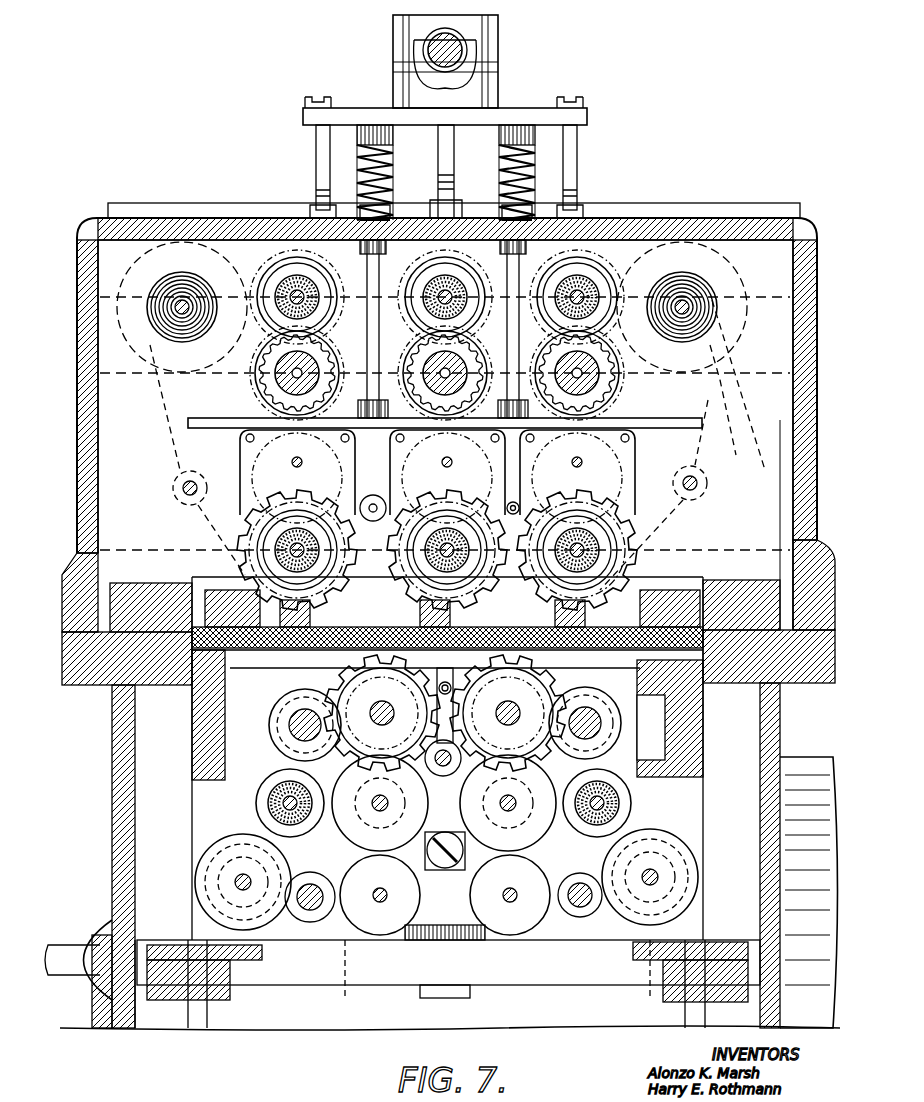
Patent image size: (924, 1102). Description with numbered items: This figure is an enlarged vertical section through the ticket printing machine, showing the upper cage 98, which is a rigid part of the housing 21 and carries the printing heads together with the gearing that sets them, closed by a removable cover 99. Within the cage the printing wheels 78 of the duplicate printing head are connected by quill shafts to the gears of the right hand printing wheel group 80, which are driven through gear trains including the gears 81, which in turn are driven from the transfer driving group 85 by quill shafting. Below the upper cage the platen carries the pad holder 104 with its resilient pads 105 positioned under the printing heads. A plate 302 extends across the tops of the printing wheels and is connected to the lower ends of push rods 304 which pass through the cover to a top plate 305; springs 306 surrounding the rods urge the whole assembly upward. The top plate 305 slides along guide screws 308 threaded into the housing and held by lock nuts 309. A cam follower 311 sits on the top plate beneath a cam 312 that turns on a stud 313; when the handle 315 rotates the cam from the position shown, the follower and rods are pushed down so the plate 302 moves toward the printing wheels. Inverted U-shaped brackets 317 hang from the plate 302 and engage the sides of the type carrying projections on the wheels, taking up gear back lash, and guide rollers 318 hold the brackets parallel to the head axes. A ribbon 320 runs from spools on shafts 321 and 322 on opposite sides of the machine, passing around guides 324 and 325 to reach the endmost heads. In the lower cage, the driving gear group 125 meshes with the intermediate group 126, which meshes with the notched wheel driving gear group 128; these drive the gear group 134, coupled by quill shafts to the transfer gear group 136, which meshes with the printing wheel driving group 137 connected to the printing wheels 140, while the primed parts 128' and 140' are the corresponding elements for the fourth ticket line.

The cam 312 is at (498, 35).
The handle 315 is at (425, 48).
The cam follower 311 is at (498, 75).
The top plate 305 is at (518, 110).
The springs 306 is at (525, 125).
The guide screws 308 is at (578, 130).
The stud 313 is at (454, 145).
The push rods 304 is at (392, 212).
The lock nuts 309 is at (305, 215).
The transfer driving group 85 is at (590, 296).
The cover 99 is at (800, 230).
The shaft 321 is at (188, 300).
The shaft 322 is at (686, 303).
The upper cage 98 is at (800, 370).
The gears 81 is at (620, 415).
The plate 302 is at (655, 418).
The inverted U-shaped brackets 317 is at (240, 455).
The guide rollers 318 is at (373, 495).
The ribbon 320 is at (722, 450).
The guide 324 is at (186, 497).
The guide 325 is at (700, 486).
The right hand printing wheel group 80 is at (605, 545).
The printing wheels 78 is at (650, 548).
The pad holder 104 is at (648, 590).
The resilient pads 105 is at (430, 630).
The printing wheels 140' is at (390, 708).
The printing wheels 140 is at (508, 708).
The printing wheel driving group 137 is at (595, 705).
The gear group 134 is at (272, 736).
The transfer gear group 136 is at (680, 738).
The housing 21 is at (112, 792).
The notched wheel driving gear group 128' is at (266, 803).
The notched wheel driving gear group 128 is at (623, 803).
The intermediate group 126 is at (628, 868).
The driving gear group 125 is at (375, 933).